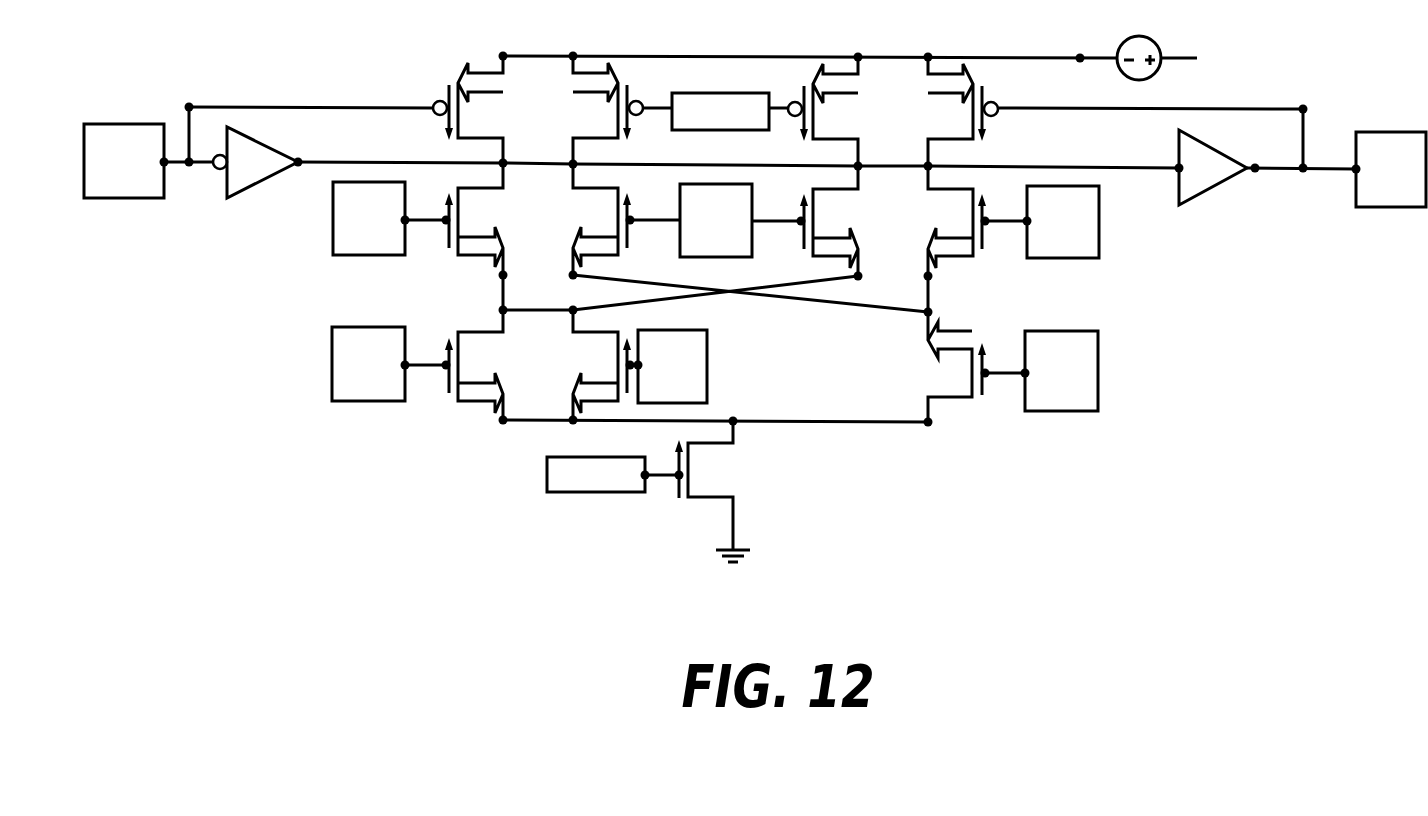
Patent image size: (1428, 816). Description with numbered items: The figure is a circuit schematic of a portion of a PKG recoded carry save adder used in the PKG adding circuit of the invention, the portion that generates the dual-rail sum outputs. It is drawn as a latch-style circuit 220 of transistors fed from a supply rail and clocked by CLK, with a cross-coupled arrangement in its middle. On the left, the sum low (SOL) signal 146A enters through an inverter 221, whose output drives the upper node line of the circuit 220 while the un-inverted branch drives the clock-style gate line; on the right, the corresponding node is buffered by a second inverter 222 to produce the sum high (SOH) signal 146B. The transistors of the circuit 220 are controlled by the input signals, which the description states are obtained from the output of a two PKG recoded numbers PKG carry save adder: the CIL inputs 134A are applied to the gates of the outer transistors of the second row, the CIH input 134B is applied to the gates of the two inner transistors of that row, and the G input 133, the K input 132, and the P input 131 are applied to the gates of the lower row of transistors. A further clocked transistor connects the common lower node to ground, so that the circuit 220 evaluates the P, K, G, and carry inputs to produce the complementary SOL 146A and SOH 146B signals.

The latch circuit 220 is at (260, 275).
The inverter 221 is at (273, 176).
The inverter 222 is at (1187, 181).
The sum low (SOL) signal 146A is at (98, 190).
The sum high (SOH) signal 146B is at (1365, 199).
The CIL input 134A is at (344, 248).
The CIL input 134B is at (691, 250).
The G input 133 is at (348, 393).
The K input 132 is at (652, 395).
The P input 131 is at (1041, 401).